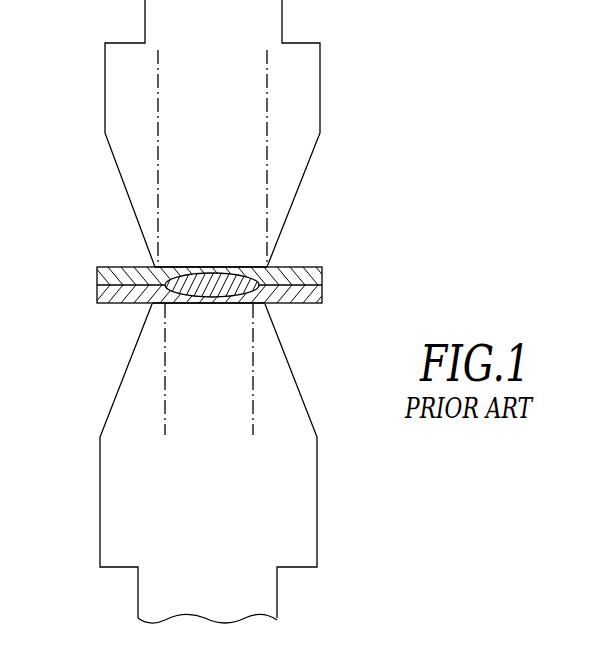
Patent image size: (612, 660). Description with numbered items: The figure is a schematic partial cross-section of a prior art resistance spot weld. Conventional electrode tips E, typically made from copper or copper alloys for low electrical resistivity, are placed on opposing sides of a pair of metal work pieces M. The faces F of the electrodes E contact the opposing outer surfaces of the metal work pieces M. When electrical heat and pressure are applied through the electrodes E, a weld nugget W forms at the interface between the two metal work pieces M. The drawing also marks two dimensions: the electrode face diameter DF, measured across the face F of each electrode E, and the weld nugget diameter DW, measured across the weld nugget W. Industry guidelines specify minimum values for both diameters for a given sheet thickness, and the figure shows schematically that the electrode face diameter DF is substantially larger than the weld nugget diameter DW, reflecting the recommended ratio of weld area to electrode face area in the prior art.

The electrode tip E is at (313, 155).
The metal work piece M is at (322, 277).
The electrode face F is at (207, 267).
The weld nugget W is at (142, 267).
The electrode face diameter DF is at (80, 85).
The weld nugget diameter DW is at (97, 398).